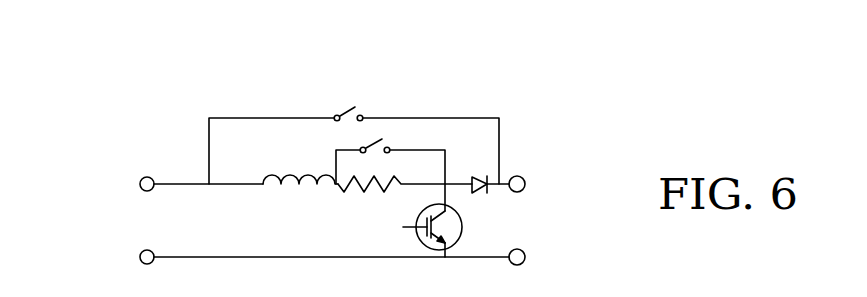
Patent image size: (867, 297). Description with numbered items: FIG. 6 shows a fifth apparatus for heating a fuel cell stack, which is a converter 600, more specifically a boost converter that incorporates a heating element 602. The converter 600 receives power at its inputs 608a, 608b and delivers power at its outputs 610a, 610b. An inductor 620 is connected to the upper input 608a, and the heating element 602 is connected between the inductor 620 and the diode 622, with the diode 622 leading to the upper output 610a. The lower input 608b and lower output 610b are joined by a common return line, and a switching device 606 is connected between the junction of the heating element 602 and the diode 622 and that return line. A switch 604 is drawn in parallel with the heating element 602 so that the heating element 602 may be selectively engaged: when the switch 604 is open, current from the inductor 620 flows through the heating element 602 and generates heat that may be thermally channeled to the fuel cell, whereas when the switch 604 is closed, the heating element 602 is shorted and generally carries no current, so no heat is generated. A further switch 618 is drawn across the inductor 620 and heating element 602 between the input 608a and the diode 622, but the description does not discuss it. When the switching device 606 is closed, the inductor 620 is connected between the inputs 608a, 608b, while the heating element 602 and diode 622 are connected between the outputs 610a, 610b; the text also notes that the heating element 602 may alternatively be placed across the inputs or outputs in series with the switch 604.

The converter 600 is at (455, 45).
The heating element 602 is at (373, 186).
The switch 604 is at (372, 142).
The switching device 606 is at (463, 227).
The input of the converter 608a is at (139, 184).
The input of the converter 608b is at (139, 257).
The output of the converter 610a is at (525, 184).
The output of the converter 610b is at (525, 257).
The bypass switch 618 is at (344, 111).
The inductor 620 is at (297, 172).
The diode 622 is at (477, 175).